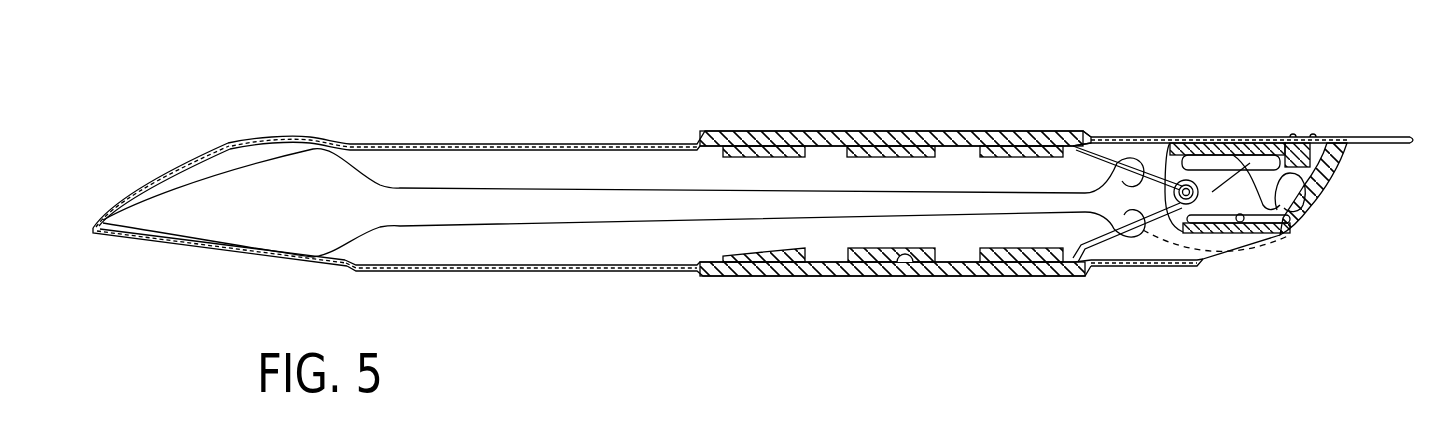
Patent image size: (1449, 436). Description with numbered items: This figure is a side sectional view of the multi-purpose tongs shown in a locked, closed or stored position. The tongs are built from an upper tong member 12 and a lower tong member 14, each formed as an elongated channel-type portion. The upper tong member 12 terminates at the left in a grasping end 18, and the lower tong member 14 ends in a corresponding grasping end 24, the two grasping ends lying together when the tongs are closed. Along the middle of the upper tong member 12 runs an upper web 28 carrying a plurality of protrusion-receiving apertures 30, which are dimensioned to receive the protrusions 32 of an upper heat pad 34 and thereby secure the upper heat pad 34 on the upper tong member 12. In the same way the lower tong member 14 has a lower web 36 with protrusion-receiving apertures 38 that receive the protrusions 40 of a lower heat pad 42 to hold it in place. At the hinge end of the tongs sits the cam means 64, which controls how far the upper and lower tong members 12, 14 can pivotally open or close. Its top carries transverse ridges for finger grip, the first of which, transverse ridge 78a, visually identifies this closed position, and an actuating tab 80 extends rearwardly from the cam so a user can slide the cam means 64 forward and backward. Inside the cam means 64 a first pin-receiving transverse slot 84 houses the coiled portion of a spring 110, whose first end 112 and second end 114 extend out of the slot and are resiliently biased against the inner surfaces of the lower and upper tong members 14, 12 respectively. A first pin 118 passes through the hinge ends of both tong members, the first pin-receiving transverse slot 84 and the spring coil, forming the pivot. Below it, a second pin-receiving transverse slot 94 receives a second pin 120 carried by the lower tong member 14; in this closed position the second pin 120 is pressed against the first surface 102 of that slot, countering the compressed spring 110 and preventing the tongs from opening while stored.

The upper tong member 12 is at (457, 143).
The lower tong member 14 is at (490, 275).
The grasping end 18 is at (230, 141).
The grasping end 24 is at (223, 253).
The upper web 28 is at (565, 141).
The protrusion-receiving apertures 30 is at (772, 152).
The protrusions 32 is at (892, 152).
The upper heat pad 34 is at (936, 140).
The lower web 36 is at (590, 278).
The protrusion-receiving apertures 38 is at (767, 250).
The protrusions 40 is at (908, 270).
The lower heat pad 42 is at (864, 277).
The cam means 64 is at (1380, 137).
The transverse ridge 78a is at (1287, 137).
The actuating tab 80 is at (1417, 147).
The first pin-receiving transverse slot 84 is at (1243, 160).
The second pin-receiving transverse slot 94 is at (1290, 231).
The first surface 102 is at (1227, 228).
The spring 110 is at (1160, 165).
The first end 112 is at (1100, 268).
The second end 114 is at (1107, 136).
The first pin 118 is at (1215, 185).
The second pin 120 is at (1242, 222).